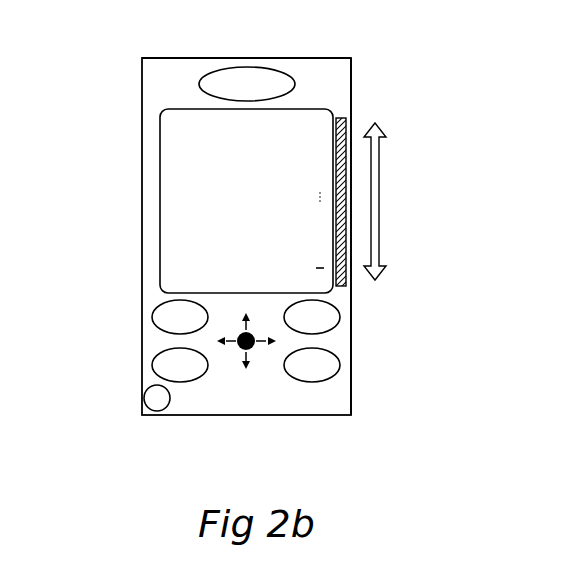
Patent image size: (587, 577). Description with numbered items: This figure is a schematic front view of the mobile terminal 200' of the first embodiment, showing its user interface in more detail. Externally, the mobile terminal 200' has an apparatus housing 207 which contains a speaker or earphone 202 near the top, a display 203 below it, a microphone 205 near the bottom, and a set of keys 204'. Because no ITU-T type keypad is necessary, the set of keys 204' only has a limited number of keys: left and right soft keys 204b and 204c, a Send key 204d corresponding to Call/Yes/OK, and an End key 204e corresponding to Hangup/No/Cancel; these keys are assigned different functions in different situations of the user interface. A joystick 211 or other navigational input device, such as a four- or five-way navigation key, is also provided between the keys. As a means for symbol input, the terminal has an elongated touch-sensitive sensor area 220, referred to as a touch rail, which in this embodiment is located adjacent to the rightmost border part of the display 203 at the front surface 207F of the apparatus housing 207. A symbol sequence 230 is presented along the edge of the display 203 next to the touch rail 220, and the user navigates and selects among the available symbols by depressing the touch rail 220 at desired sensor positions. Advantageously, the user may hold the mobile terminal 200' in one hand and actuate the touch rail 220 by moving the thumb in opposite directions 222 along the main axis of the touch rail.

The mobile terminal 200' is at (194, 220).
The speaker or earphone 202 is at (237, 78).
The display 203 is at (167, 169).
The set of keys 204' is at (76, 340).
The left soft key 204b is at (167, 315).
The right soft key 204c is at (318, 320).
The Send key 204d is at (167, 365).
The End key 204e is at (318, 368).
The microphone 205 is at (157, 398).
The apparatus housing 207 is at (300, 58).
The front surface of the apparatus housing 207F is at (335, 82).
The joystick 211 is at (237, 365).
The elongated touch-sensitive sensor area (touch rail) 220 is at (346, 123).
The opposite directions 222 is at (380, 162).
The symbol sequence 230 is at (312, 147).